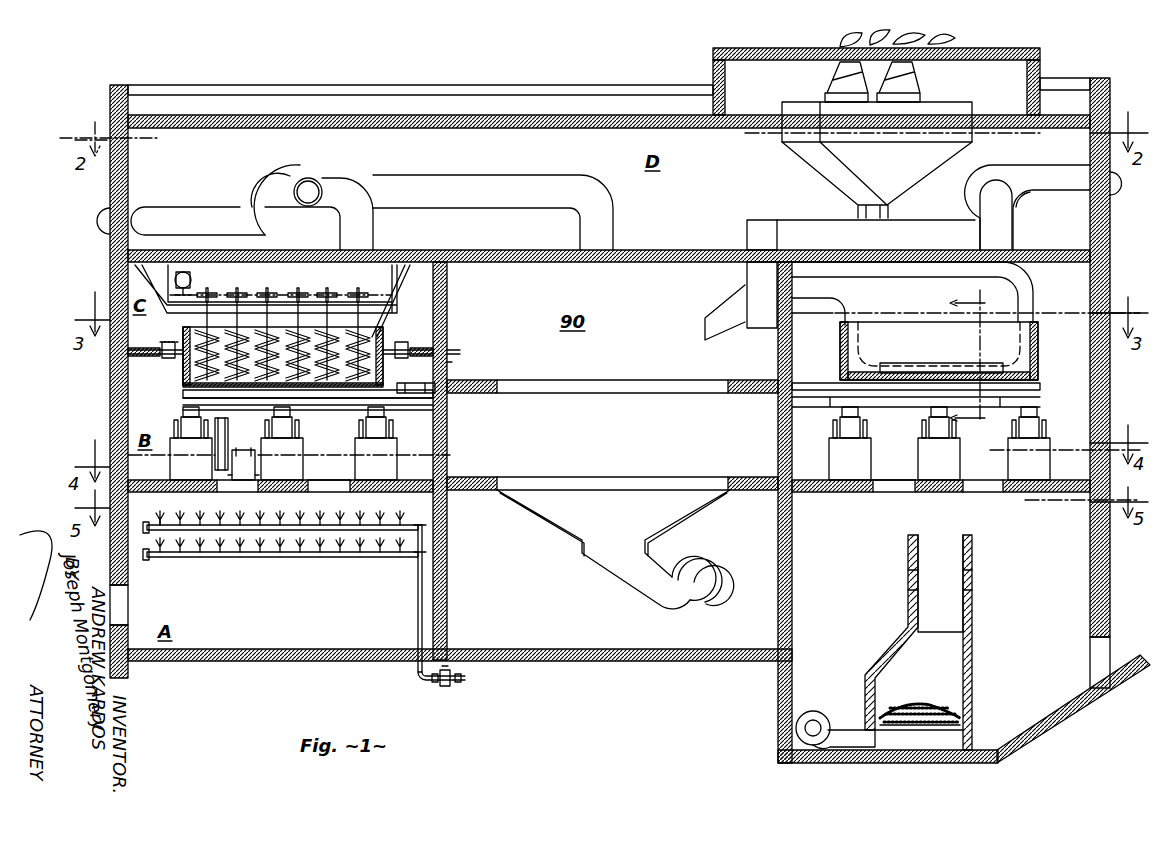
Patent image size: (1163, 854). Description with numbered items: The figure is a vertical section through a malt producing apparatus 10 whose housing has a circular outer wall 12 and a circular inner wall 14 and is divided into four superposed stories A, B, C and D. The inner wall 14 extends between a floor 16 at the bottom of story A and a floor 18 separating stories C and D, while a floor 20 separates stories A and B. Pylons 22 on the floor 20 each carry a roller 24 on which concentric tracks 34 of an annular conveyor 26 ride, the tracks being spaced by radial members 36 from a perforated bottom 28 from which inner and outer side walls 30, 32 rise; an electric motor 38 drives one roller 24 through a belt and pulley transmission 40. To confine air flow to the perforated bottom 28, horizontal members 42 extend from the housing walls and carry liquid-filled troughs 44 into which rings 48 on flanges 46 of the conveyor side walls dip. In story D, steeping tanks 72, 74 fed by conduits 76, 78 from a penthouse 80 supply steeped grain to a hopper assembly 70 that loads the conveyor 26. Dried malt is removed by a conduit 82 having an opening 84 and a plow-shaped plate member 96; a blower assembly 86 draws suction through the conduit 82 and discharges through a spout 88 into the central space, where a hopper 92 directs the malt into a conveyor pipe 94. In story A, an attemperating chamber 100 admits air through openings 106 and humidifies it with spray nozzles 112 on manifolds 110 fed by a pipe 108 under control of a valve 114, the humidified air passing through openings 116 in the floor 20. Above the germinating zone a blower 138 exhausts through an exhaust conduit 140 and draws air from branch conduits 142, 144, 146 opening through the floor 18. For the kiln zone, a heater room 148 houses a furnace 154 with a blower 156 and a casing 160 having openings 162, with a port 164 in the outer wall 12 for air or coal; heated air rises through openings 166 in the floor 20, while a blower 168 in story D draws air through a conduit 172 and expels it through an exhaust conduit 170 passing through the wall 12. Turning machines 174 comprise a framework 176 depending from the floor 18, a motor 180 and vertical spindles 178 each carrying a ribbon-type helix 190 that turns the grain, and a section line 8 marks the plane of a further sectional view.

The apparatus 10 is at (44, 203).
The outer wall 12 is at (110, 408).
The inner wall 14 is at (447, 550).
The floor 16 is at (497, 661).
The floor 18 is at (609, 245).
The floor 20 is at (452, 480).
The pylons 22 is at (303, 448).
The roller 24 is at (300, 427).
The conveyor 26 is at (826, 327).
The perforated bottom 28 is at (183, 385).
The inner side wall 30 is at (412, 382).
The outer side wall 32 is at (183, 365).
The tracks 34 is at (262, 412).
The radial members 36 is at (190, 396).
The electric motor 38 is at (243, 464).
The belt and pulley transmission 40 is at (228, 447).
The horizontal member 42 is at (150, 352).
The trough 44 is at (433, 368).
The annular flange 46 is at (400, 342).
The ring 48 is at (433, 342).
The hopper assembly 70 is at (748, 222).
The steeping tank 72 is at (805, 150).
The steeping tank 74 is at (940, 148).
The conduit 76 is at (830, 76).
The conduit 78 is at (905, 72).
The penthouse 80 is at (1040, 52).
The conduit 82 is at (1023, 292).
The opening 84 is at (910, 364).
The blower assembly 86 is at (745, 270).
The spout 88 is at (705, 312).
The hopper 92 is at (560, 535).
The conveyor pipe 94 is at (672, 578).
The plate member 96 is at (868, 322).
The attemperating chamber 100 is at (255, 661).
The openings 106 is at (128, 605).
The pipe 108 is at (416, 596).
The manifolds 110 is at (262, 557).
The spray nozzles 112 is at (258, 517).
The valve 114 is at (432, 684).
The openings 116 is at (313, 487).
The blower 138 is at (270, 160).
The exhaust conduit 140 is at (172, 210).
The branch conduit 142 is at (373, 224).
The branch conduit 144 is at (482, 178).
The branch conduit 146 is at (326, 184).
The heater room 148 is at (778, 690).
The furnace 154 is at (975, 652).
The blower 156 is at (812, 712).
The casing 160 is at (975, 600).
The openings 162 is at (908, 585).
The port 164 is at (1100, 650).
The openings 166 is at (900, 493).
The blower 168 is at (1028, 208).
The exhaust conduit 170 is at (1038, 172).
The conduit 172 is at (1008, 234).
The turning machine 174 is at (303, 284).
The framework 176 is at (370, 302).
The spindles 178 is at (266, 292).
The motor 180 is at (201, 279).
The ribbon-type helix 190 is at (405, 301).
The section line 8 is at (964, 368).